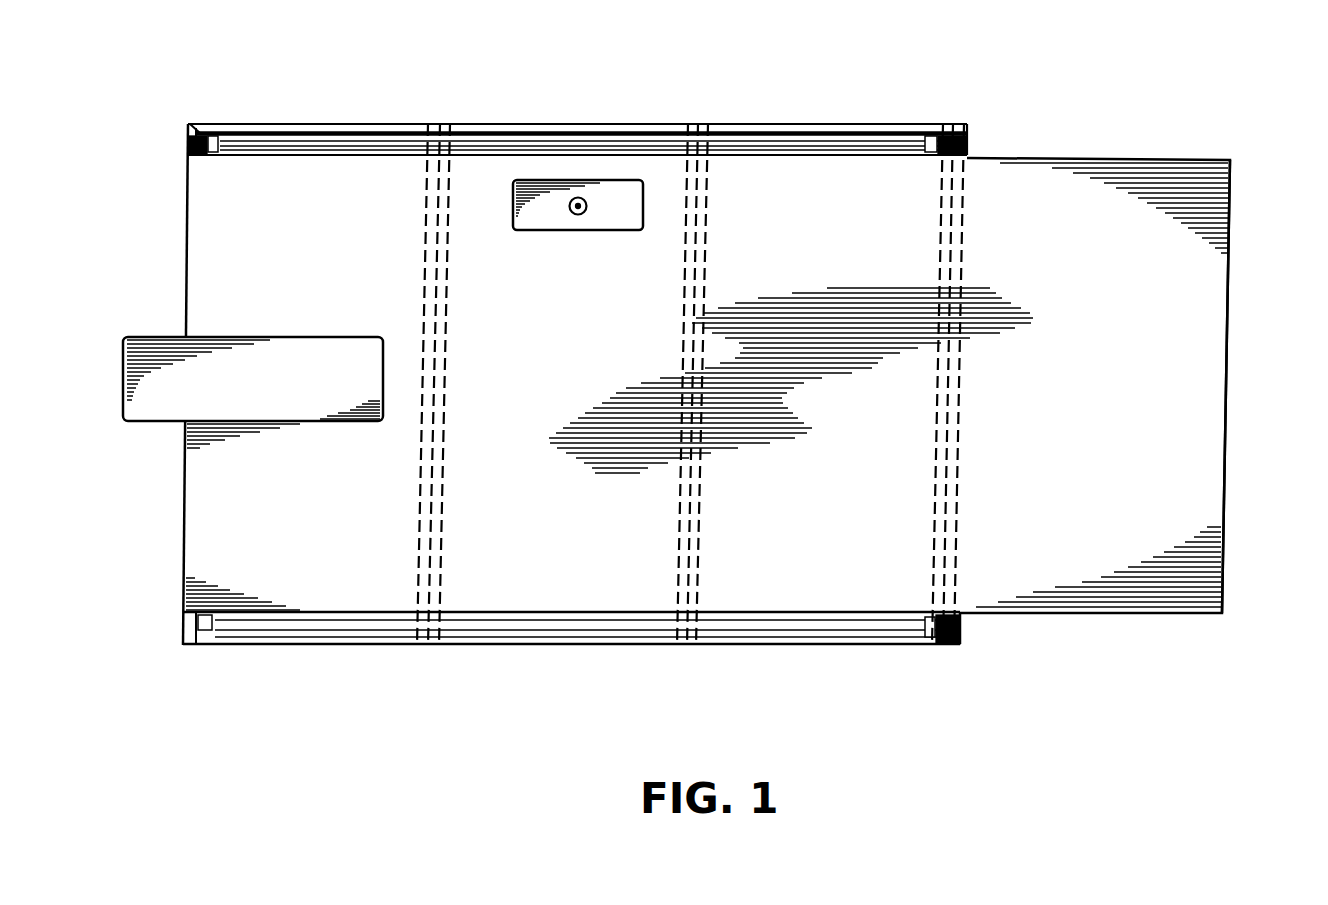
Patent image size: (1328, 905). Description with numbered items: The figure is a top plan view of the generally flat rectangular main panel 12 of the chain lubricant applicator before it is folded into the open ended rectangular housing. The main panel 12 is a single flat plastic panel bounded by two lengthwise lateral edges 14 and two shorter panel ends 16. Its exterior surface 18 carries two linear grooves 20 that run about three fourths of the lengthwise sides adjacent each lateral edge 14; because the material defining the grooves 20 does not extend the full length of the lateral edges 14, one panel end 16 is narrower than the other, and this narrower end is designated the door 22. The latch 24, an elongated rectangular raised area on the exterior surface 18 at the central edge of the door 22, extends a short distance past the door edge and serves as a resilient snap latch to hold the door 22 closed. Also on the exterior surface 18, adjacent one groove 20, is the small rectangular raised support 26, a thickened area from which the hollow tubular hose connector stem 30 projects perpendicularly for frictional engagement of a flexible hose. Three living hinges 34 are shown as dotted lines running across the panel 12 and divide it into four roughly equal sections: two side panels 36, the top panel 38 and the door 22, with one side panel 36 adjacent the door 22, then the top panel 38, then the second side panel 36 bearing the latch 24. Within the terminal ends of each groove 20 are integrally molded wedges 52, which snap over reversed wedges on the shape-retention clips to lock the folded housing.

The main panel 12 is at (781, 118).
The lateral edges 14 is at (273, 124).
The panel ends 16 is at (186, 212).
The exterior surface 18 is at (1172, 526).
The linear grooves 20 is at (517, 146).
The door 22 is at (1210, 330).
The latch 24 is at (142, 422).
The support 26 is at (528, 226).
The hose connector stem 30 is at (582, 214).
The living hinges 34 is at (957, 138).
The side panels 36 is at (375, 172).
The top panel 38 is at (616, 180).
The wedge 52 is at (192, 124).